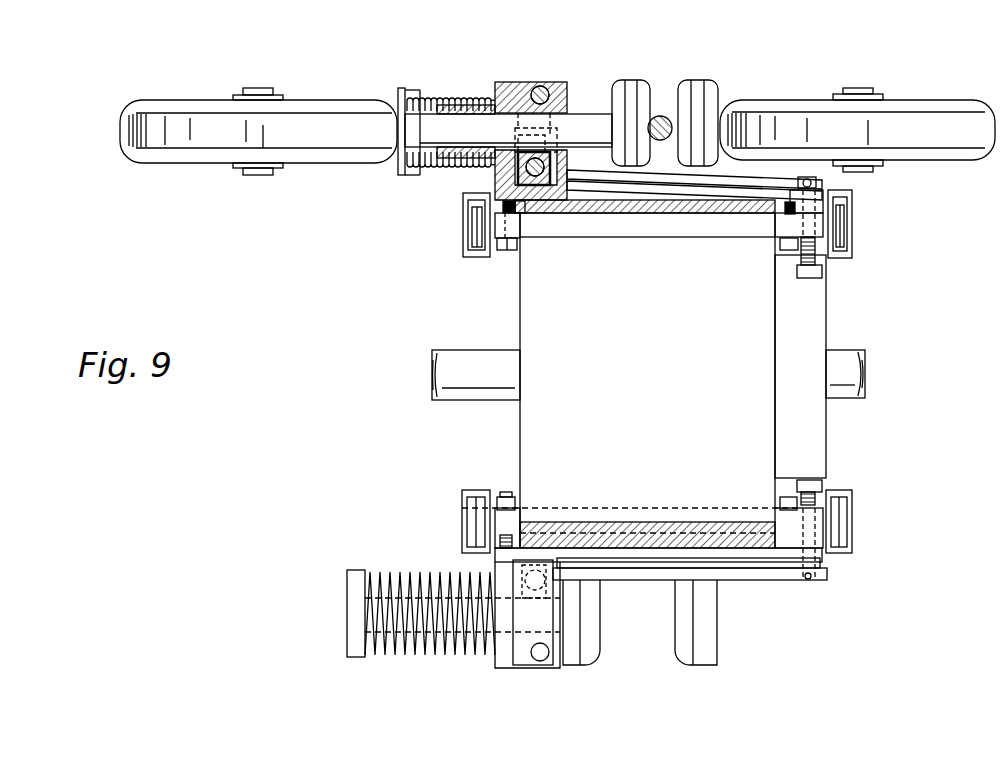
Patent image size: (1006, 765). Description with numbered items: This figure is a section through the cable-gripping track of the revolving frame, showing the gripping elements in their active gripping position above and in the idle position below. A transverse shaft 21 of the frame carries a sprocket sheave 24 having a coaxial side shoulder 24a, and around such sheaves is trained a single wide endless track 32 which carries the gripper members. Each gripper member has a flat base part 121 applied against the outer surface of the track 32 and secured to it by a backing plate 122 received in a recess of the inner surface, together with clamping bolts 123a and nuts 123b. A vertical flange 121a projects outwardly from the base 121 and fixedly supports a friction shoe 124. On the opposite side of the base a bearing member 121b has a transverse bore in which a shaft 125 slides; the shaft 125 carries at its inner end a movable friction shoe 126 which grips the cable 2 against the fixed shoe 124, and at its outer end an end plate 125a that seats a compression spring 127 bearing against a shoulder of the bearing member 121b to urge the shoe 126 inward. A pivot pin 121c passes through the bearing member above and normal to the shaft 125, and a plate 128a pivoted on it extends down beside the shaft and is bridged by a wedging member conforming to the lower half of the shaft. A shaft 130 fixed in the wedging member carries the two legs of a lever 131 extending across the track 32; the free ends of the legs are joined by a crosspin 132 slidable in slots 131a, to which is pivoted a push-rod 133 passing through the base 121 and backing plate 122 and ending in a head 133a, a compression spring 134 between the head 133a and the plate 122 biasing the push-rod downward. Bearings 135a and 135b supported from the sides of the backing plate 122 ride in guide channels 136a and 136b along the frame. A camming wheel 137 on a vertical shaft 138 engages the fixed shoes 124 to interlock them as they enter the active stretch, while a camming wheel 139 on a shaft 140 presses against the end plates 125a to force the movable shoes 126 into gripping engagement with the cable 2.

The cable 2 is at (661, 116).
The transverse shaft 21 is at (860, 381).
The sprocket sheave 24 is at (520, 322).
The coaxial side shoulder 24a is at (815, 438).
The endless track 32 is at (707, 200).
The base part 121 is at (687, 185).
The vertical flange 121a is at (712, 176).
The bearing member 121b is at (568, 114).
The pivot pin 121c is at (540, 84).
The backing plate 122 is at (603, 226).
The clamping bolt 123a is at (500, 207).
The nut 123b is at (506, 251).
The fixed friction shoe 124 is at (700, 84).
The shaft 125 is at (479, 127).
The end plate 125a is at (402, 90).
The movable friction shoe 126 is at (638, 82).
The compression spring 127 is at (441, 104).
The plate 128a is at (564, 150).
The shaft 130 is at (532, 208).
The lever 131 is at (637, 178).
The slot 131a is at (813, 180).
The crosspin 132 is at (851, 194).
The push-rod 133 is at (812, 204).
The head 133a is at (815, 279).
The compression spring 134 is at (818, 258).
The bearing 135a is at (846, 236).
The bearing 135b is at (478, 226).
The guide channel 136a is at (855, 255).
The guide channel 136b is at (470, 254).
The camming wheel 137 is at (951, 108).
The vertical shaft 138 is at (868, 88).
The camming wheel 139 is at (197, 92).
The shaft 140 is at (283, 78).